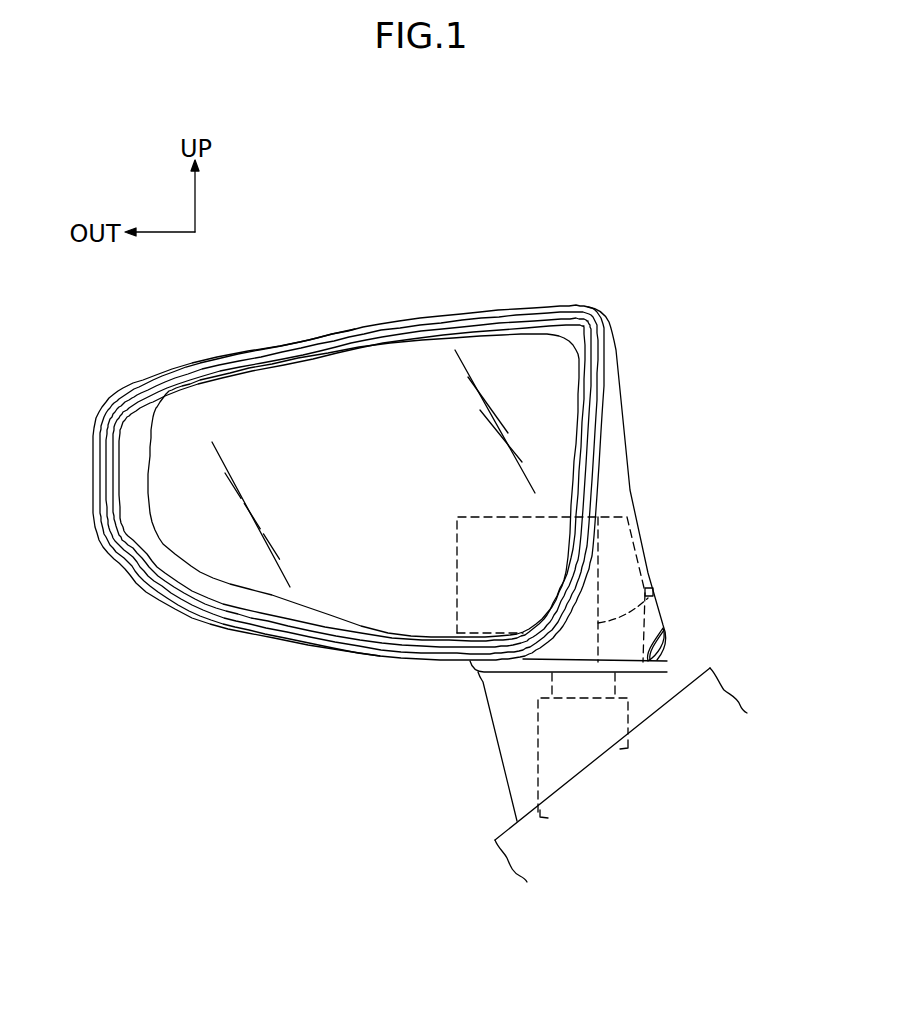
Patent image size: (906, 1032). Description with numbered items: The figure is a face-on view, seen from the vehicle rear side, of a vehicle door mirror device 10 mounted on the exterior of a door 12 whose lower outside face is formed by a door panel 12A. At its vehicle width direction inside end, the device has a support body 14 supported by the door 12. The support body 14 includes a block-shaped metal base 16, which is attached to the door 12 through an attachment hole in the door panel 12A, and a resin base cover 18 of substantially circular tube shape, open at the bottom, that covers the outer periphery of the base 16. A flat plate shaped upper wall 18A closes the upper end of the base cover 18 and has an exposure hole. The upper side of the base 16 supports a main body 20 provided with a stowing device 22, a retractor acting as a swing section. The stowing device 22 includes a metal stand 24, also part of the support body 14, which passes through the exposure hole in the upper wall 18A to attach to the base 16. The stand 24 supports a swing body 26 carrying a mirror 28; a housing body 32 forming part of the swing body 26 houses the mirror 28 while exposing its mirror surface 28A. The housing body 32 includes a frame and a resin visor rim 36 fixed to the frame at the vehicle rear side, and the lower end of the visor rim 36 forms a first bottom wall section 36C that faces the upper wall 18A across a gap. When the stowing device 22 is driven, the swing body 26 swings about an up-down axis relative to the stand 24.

The vehicle door mirror device 10 is at (636, 188).
The door 12 is at (458, 822).
The door panel 12A is at (517, 823).
The support body 14 is at (456, 702).
The base 16 is at (538, 725).
The base cover 18 is at (496, 757).
The upper wall 18A is at (660, 633).
The main body 20 is at (660, 540).
The stowing device 22 is at (652, 588).
The stand 24 is at (598, 623).
The swing body 26 is at (632, 443).
The mirror 28 is at (222, 566).
The mirror surface 28A is at (273, 597).
The housing body 32 is at (430, 302).
The visor rim 36 is at (340, 324).
The first bottom wall section 36C is at (630, 667).